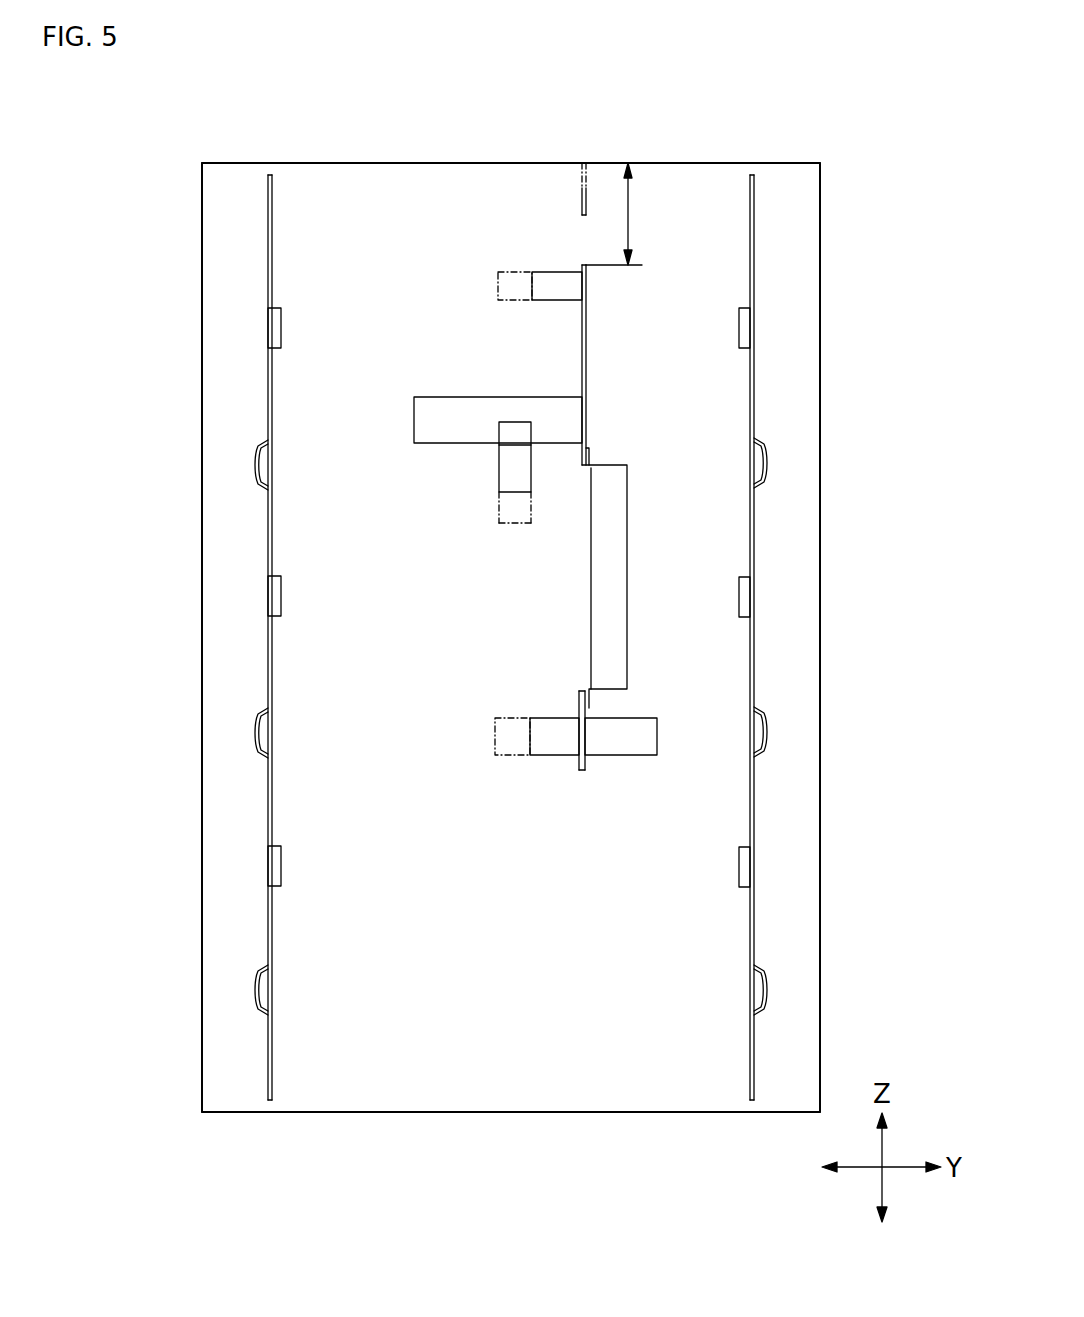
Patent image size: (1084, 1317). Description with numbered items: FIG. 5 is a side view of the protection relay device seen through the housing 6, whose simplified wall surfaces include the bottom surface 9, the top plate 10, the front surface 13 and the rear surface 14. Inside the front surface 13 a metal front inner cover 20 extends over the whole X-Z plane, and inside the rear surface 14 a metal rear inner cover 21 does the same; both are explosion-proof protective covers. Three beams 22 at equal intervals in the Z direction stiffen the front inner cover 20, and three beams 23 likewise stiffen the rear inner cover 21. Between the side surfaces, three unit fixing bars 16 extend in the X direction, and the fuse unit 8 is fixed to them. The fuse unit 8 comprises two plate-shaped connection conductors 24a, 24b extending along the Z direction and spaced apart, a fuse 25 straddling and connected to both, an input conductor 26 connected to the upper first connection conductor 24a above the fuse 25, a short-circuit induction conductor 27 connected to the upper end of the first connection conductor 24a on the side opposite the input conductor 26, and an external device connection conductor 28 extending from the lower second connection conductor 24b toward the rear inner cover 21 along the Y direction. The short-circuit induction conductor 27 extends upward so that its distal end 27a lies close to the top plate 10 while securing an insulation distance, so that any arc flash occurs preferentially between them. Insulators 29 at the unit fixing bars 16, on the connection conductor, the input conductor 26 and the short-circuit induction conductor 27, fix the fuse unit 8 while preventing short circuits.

The housing 6 is at (664, 163).
The fuse unit 8 is at (630, 507).
The bottom surface 9 is at (515, 1112).
The top plate 10 is at (511, 163).
The front surface 13 is at (202, 398).
The rear surface 14 is at (820, 460).
The unit fixing bar 16 is at (498, 286).
The front inner cover 20 is at (268, 662).
The rear inner cover 21 is at (754, 797).
The beam 22 is at (281, 328).
The beam 23 is at (739, 330).
The first connection conductor 24a is at (583, 468).
The second connection conductor 24b is at (579, 705).
The fuse 25 is at (627, 538).
The input conductor 26 is at (452, 397).
The short-circuit induction conductor 27 is at (582, 200).
The distal end 27a is at (580, 225).
The external device connection conductor 28 is at (622, 755).
The insulator 29 is at (555, 300).